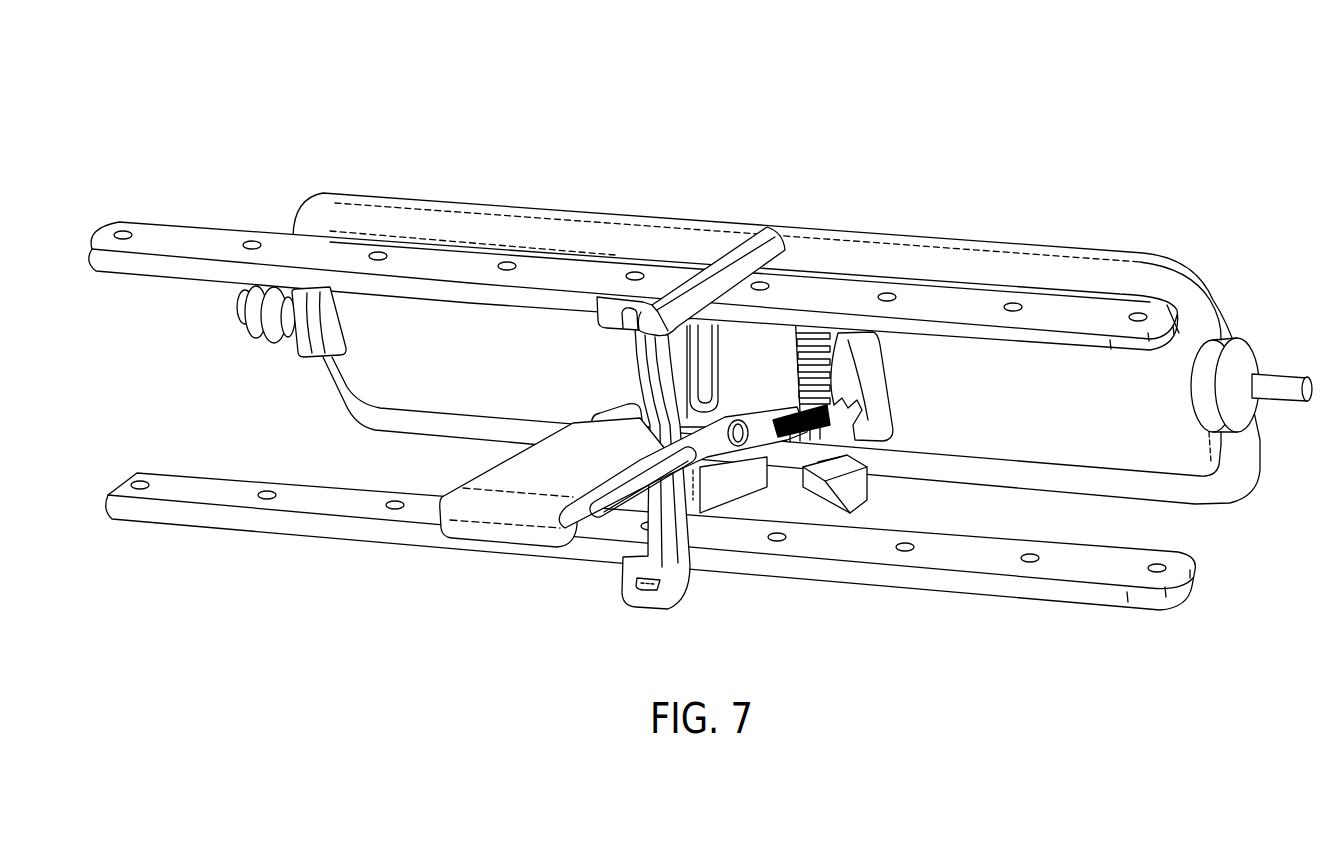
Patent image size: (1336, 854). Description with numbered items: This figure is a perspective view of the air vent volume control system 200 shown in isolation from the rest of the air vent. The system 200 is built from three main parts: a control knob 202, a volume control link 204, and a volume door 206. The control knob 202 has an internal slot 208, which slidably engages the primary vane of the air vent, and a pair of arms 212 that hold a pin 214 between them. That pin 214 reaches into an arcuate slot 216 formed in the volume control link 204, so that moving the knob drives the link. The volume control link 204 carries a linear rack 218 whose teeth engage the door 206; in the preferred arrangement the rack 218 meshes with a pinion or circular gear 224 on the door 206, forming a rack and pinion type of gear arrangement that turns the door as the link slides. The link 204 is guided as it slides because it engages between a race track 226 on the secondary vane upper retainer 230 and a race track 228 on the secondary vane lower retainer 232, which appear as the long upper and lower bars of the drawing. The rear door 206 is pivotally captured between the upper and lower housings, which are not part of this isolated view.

The air vent volume control system 200 is at (1005, 130).
The control knob 202 is at (493, 530).
The volume control link 204 is at (790, 480).
The volume door 206 is at (1168, 453).
The internal slot 208 is at (623, 499).
The arms 212 is at (692, 406).
The pin 214 is at (797, 330).
The arcuate slot 216 is at (685, 372).
The rack 218 is at (812, 425).
The pinion or circular gear 224 is at (853, 343).
The race track 226 is at (637, 317).
The race track 228 is at (657, 583).
The secondary vane upper retainer 230 is at (223, 243).
The secondary vane lower retainer 232 is at (305, 523).